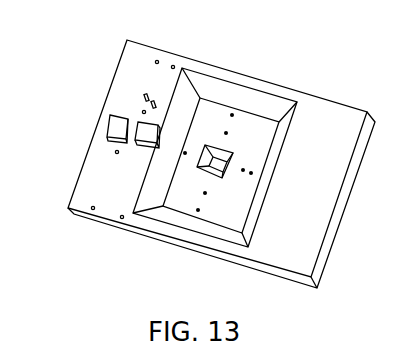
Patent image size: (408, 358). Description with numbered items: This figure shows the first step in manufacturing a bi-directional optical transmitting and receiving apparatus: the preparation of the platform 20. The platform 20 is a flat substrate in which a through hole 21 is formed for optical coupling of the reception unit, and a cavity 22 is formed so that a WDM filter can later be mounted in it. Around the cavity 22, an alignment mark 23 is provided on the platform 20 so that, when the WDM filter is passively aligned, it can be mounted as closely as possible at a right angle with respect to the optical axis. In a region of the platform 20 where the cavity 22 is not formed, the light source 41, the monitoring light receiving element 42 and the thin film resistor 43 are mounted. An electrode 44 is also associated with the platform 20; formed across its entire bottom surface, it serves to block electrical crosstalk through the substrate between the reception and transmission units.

The platform 20 is at (125, 72).
The through hole 21 is at (198, 173).
The cavity 22 is at (256, 132).
The alignment mark 23 is at (228, 132).
The light source 41 is at (143, 147).
The monitoring light receiving element 42 is at (115, 128).
The thin film resistor 43 is at (143, 98).
The electrode 44 is at (141, 112).